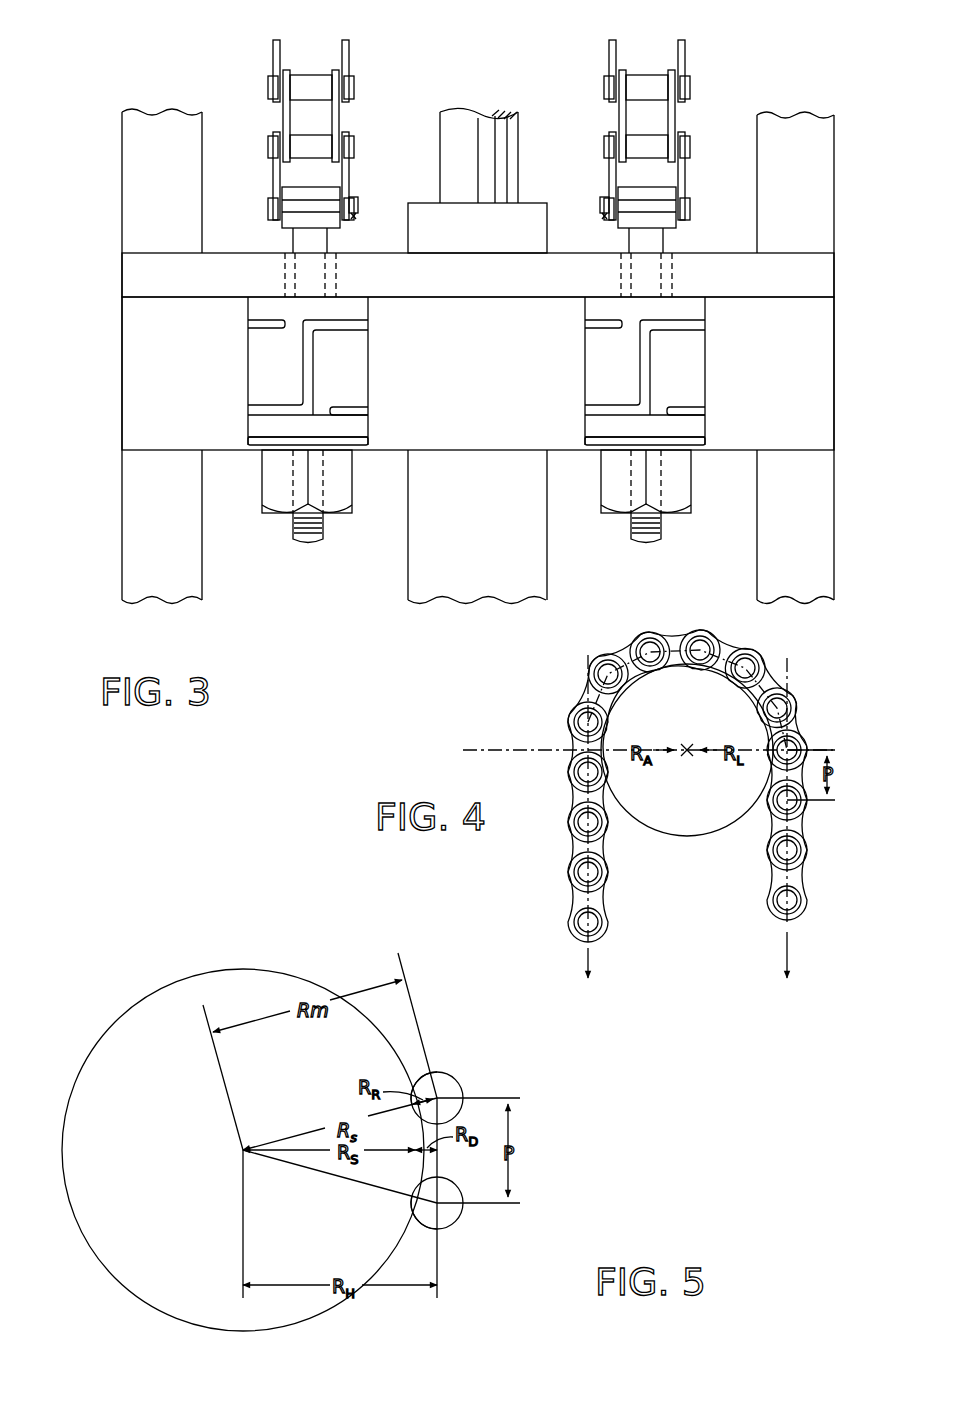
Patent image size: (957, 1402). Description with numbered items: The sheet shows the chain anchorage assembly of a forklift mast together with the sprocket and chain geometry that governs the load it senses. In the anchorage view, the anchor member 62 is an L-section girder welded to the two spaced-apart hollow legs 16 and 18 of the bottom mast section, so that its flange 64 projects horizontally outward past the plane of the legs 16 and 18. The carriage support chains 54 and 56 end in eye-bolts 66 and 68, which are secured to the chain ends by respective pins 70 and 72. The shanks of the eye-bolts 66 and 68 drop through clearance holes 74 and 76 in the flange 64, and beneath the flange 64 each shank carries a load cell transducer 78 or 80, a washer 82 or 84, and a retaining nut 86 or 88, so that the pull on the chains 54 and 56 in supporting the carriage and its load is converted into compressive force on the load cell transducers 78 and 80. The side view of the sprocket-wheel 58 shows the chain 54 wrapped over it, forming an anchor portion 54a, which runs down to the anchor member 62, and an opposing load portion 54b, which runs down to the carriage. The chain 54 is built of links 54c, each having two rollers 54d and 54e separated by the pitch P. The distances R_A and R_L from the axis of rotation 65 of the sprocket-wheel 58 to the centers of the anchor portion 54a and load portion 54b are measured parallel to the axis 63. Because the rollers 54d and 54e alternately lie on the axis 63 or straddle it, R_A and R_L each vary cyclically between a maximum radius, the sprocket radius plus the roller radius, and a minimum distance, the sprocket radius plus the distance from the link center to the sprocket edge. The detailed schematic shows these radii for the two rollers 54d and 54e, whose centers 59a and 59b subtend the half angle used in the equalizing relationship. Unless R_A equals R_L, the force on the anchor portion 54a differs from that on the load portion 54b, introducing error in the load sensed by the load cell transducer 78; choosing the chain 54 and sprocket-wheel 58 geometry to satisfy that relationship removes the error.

In FIG. 3, the hollow leg 16 is at (757, 580).
In FIG. 3, the hollow leg 18 is at (180, 555).
In FIG. 3, the carriage support chain 54 is at (677, 133).
In FIG. 4, the anchor portion 54a is at (548, 882).
In FIG. 4, the load portion 54b is at (827, 885).
In FIG. 4, the link 54c is at (770, 673).
In FIG. 4, the roller 54d is at (798, 742).
In FIG. 5, the roller 54d is at (463, 1085).
In FIG. 4, the roller 54e is at (793, 808).
In FIG. 5, the roller 54e is at (450, 1228).
In FIG. 3, the carriage support chain 56 is at (337, 130).
In FIG. 4, the sprocket-wheel 58 is at (743, 723).
In FIG. 5, the center 59a is at (450, 1068).
In FIG. 5, the center 59b is at (441, 1200).
In FIG. 3, the anchor member 62 is at (808, 347).
In FIG. 4, the axis 63 is at (470, 740).
In FIG. 3, the flange 64 is at (800, 287).
In FIG. 4, the axis of rotation 65 is at (693, 747).
In FIG. 3, the eye-bolt 66 is at (650, 247).
In FIG. 3, the eye-bolt 68 is at (307, 247).
In FIG. 3, the pin 70 is at (690, 210).
In FIG. 3, the pin 72 is at (273, 203).
In FIG. 3, the clearance hole 74 is at (620, 270).
In FIG. 3, the clearance hole 76 is at (338, 265).
In FIG. 3, the load cell transducer 78 is at (597, 375).
In FIG. 3, the load cell transducer 80 is at (260, 375).
In FIG. 3, the washer 82 is at (707, 441).
In FIG. 3, the washer 84 is at (370, 441).
In FIG. 3, the retaining nut 86 is at (632, 470).
In FIG. 3, the retaining nut 88 is at (273, 477).